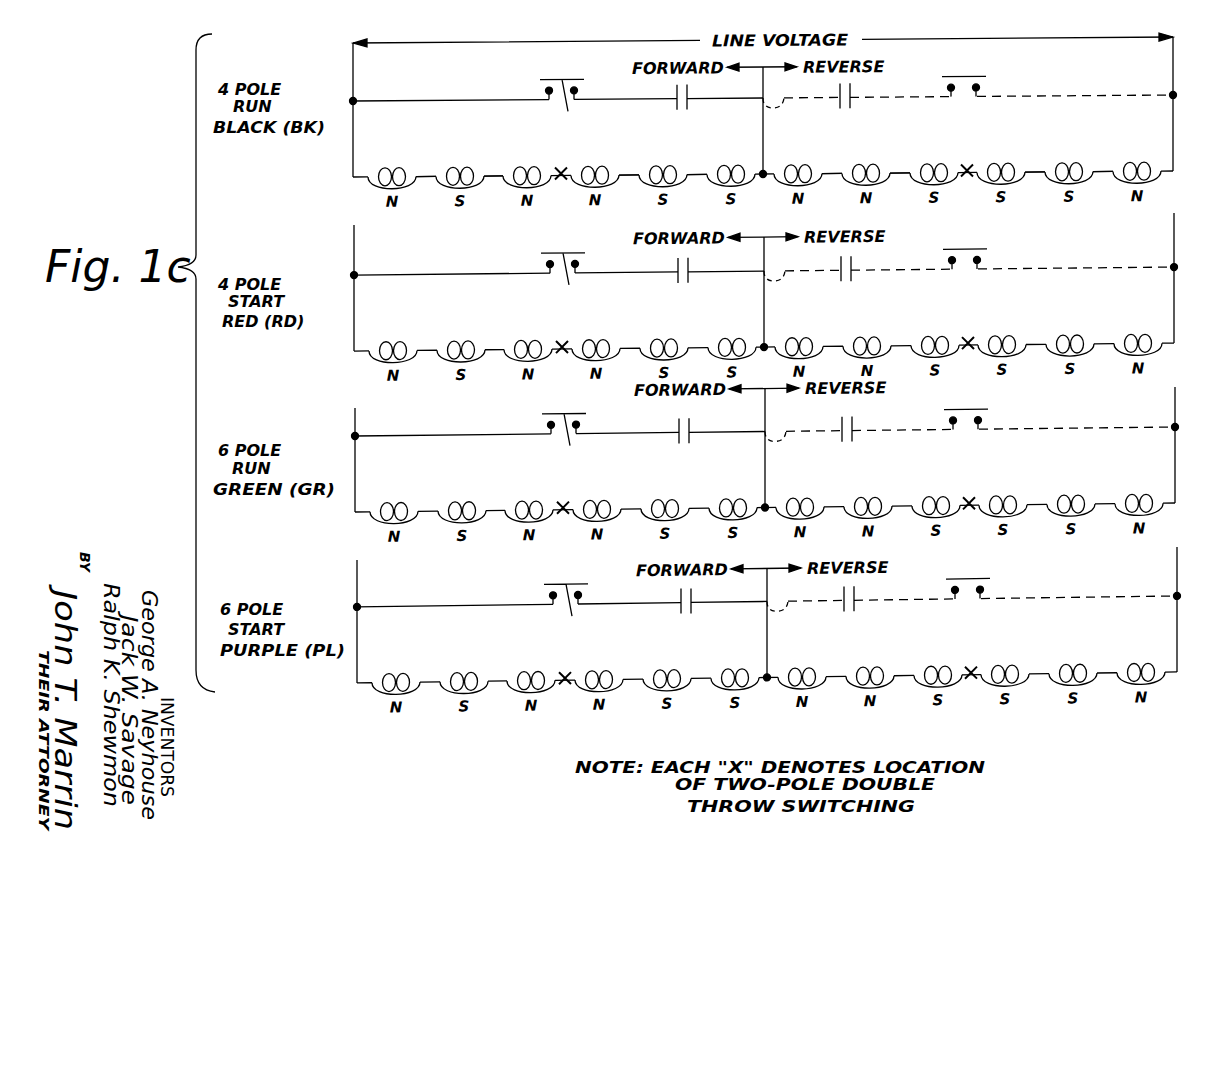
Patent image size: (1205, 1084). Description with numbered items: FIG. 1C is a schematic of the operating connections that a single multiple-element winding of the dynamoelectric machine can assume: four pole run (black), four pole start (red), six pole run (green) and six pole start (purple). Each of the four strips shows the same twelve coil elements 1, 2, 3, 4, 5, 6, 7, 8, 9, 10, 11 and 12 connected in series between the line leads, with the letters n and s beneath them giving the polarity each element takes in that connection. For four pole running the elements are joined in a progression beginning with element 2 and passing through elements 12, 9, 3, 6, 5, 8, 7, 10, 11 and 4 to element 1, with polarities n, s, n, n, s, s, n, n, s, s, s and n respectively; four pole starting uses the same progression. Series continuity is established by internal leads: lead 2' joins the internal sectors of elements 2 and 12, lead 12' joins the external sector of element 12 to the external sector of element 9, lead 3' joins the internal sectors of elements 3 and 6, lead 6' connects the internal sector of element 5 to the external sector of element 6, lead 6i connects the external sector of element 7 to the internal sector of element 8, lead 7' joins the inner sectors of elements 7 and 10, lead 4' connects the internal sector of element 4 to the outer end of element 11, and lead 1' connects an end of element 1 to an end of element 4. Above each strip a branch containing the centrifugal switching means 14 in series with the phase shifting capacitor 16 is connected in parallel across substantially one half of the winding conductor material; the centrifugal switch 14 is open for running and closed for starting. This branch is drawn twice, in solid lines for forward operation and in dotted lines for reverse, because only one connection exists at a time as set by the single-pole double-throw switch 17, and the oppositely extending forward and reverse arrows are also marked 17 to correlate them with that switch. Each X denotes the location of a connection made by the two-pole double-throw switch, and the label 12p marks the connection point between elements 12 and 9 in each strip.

The winding element 1 is at (1139, 412).
The winding element 2 is at (394, 420).
The winding element 3 is at (766, 415).
The winding element 4 is at (1071, 413).
The winding element 5 is at (766, 416).
The winding element 6 is at (766, 416).
The winding element 7 is at (766, 416).
The winding element 8 is at (766, 417).
The winding element 9 is at (529, 419).
The winding element 10 is at (766, 417).
The winding element 11 is at (1003, 413).
The winding element 12 is at (779, 425).
The pole pair connection 12p is at (764, 458).
The centrifugal switching means 14 is at (564, 359).
The phase shifting means 16 is at (788, 355).
The single-pole double-throw switch 17 is at (785, 374).
The lead 2' is at (429, 144).
The lead 12' is at (501, 144).
The lead 3' is at (629, 148).
The lead 6' is at (697, 150).
The lead 6i is at (827, 146).
The lead 7' is at (904, 147).
The lead 4' is at (1041, 139).
The lead 1' is at (1113, 138).